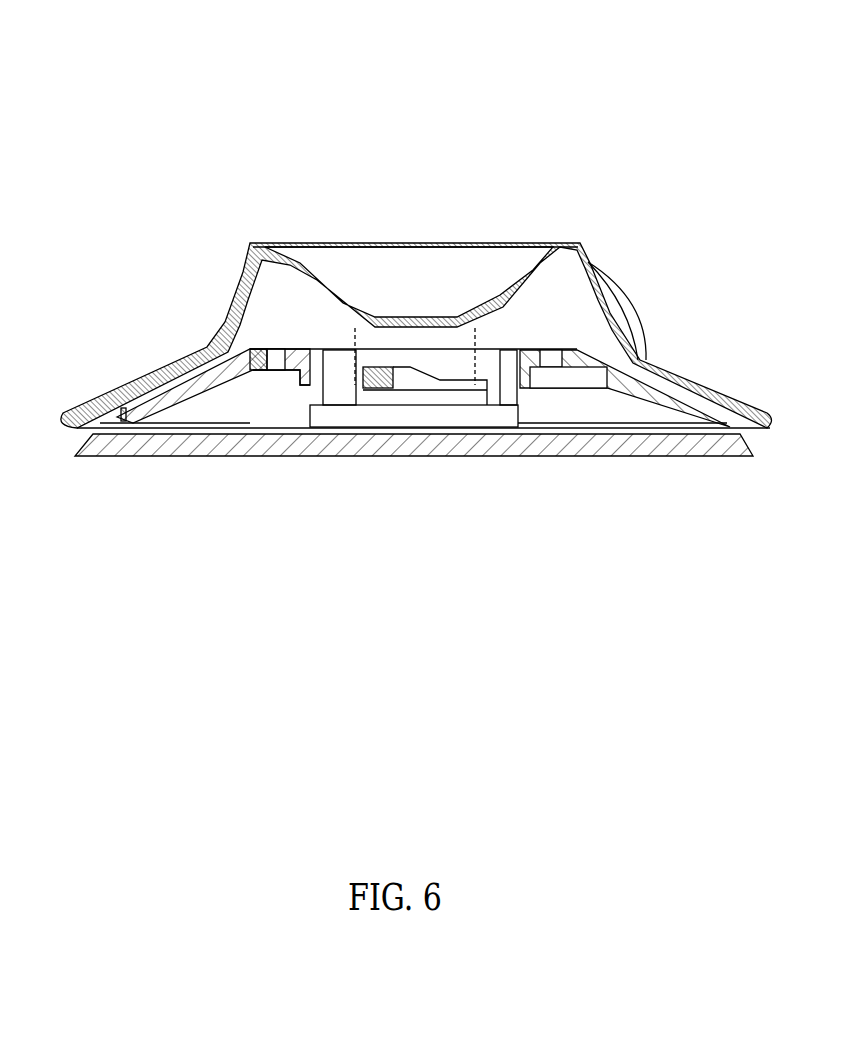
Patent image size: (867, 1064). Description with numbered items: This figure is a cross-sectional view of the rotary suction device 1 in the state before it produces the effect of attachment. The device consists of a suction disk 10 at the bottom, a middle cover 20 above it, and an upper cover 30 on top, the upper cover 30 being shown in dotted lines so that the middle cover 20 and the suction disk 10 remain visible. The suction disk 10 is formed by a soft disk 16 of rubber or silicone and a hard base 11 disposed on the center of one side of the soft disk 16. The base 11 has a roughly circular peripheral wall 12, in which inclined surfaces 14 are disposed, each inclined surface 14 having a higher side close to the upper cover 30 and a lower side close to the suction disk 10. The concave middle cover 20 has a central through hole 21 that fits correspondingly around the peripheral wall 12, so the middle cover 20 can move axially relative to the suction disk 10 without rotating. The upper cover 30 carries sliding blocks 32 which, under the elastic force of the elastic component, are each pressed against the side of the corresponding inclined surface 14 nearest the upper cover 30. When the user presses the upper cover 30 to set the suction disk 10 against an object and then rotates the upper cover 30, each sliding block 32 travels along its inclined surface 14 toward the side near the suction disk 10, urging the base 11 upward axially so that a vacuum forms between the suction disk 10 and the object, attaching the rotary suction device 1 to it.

The rotary suction device 1 is at (647, 127).
The suction disk 10 is at (682, 462).
The base 11 is at (333, 343).
The peripheral wall 12 is at (508, 363).
The inclined surface 14 is at (420, 374).
The soft disk 16 is at (578, 436).
The middle cover 20 is at (673, 403).
The central through hole 21 is at (300, 372).
The upper cover 30 is at (583, 245).
The sliding block 32 is at (378, 378).